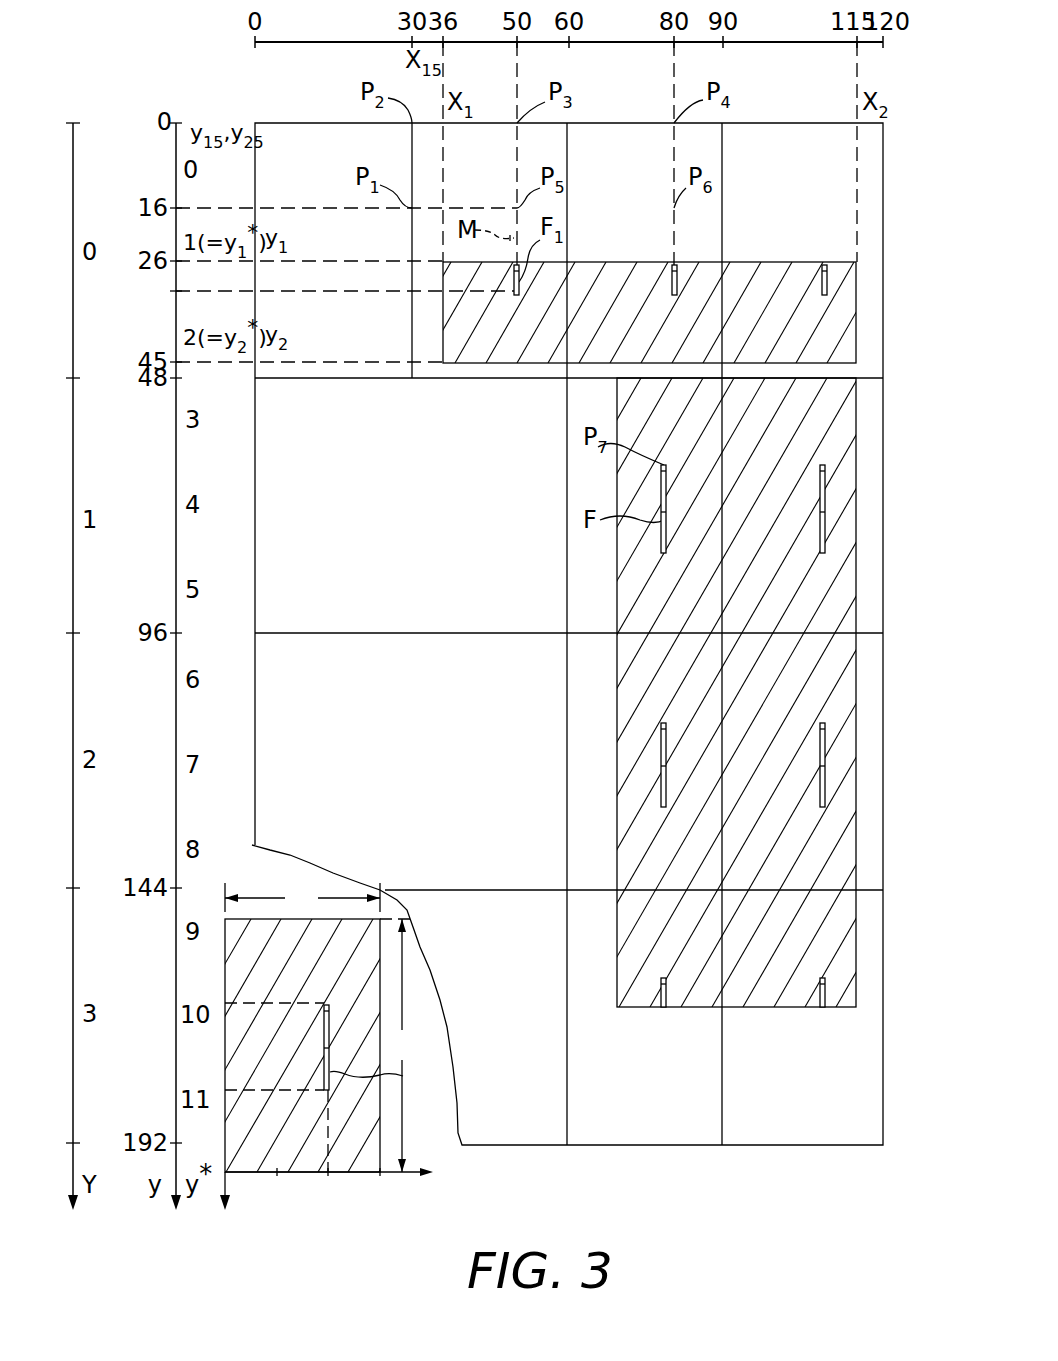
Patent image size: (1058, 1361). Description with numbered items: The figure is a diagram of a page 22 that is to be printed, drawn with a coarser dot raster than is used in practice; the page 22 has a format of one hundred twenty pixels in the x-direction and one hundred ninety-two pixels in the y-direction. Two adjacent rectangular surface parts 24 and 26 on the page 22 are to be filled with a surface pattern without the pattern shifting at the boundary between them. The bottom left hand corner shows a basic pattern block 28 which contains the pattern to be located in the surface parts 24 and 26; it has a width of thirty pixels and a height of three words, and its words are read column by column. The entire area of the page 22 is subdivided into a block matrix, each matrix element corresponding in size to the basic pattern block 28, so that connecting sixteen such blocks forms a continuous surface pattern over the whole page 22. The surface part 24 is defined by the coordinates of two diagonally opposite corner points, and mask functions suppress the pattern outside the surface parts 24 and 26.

The page 22 is at (643, 1145).
The surface part 24 is at (788, 262).
The surface part 26 is at (790, 1007).
The basic pattern block 28 is at (381, 975).